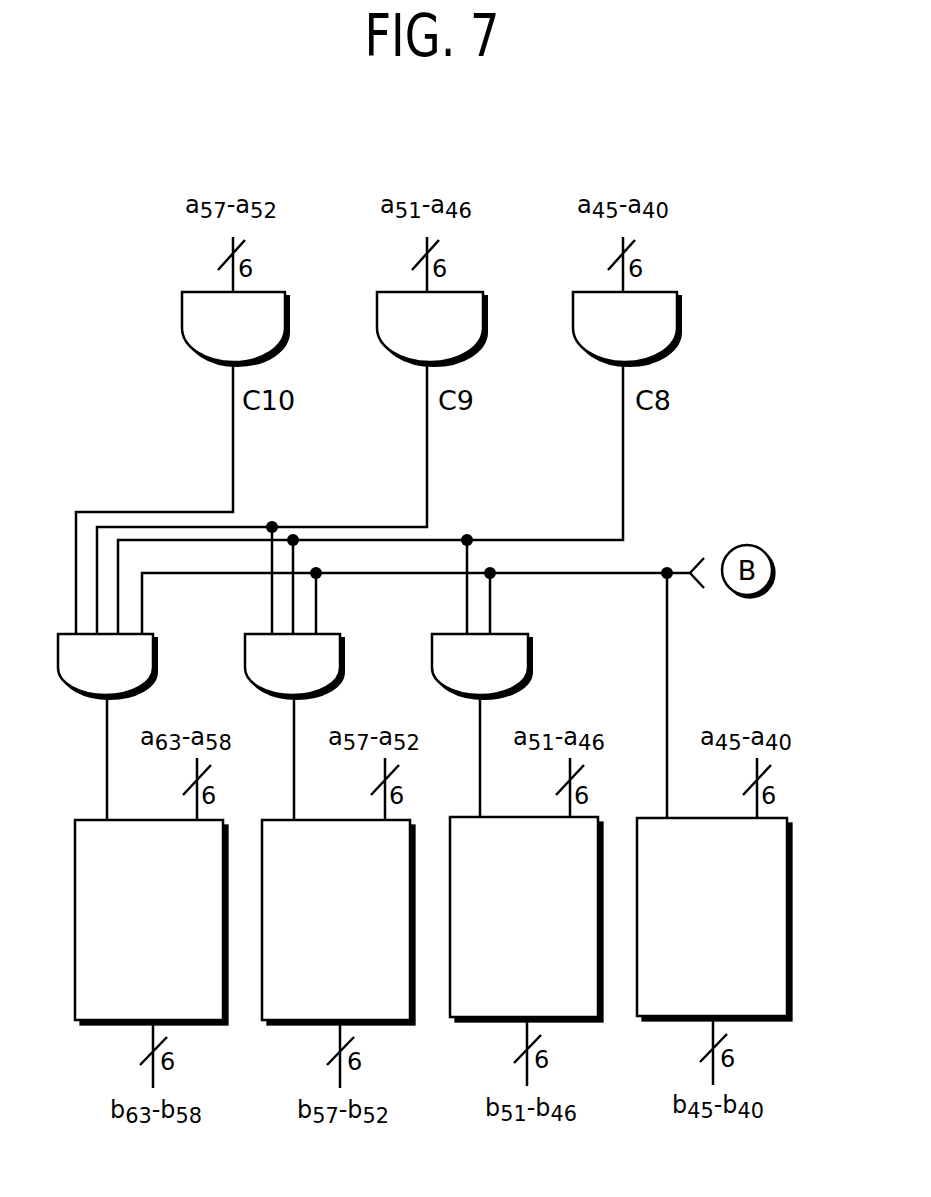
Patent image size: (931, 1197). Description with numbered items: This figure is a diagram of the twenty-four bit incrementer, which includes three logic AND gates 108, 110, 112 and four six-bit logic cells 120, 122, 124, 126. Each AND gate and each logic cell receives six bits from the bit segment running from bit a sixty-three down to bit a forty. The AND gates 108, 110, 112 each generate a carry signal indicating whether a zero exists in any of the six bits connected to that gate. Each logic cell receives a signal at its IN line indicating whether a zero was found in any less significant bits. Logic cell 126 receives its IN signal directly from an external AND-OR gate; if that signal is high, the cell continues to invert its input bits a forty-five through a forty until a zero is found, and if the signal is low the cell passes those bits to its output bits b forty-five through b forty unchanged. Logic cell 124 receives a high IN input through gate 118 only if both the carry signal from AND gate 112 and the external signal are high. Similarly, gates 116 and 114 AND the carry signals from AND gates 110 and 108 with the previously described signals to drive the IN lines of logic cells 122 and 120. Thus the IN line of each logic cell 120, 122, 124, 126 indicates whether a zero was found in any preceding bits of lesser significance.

The logic AND gate 108 is at (213, 337).
The logic AND gate 110 is at (408, 337).
The logic AND gate 112 is at (604, 337).
The AND gate 114 is at (86, 677).
The AND gate 116 is at (273, 677).
The AND gate 118 is at (460, 677).
The logic cell 120 is at (128, 980).
The logic cell 122 is at (315, 980).
The logic cell 124 is at (503, 977).
The logic cell 126 is at (691, 978).